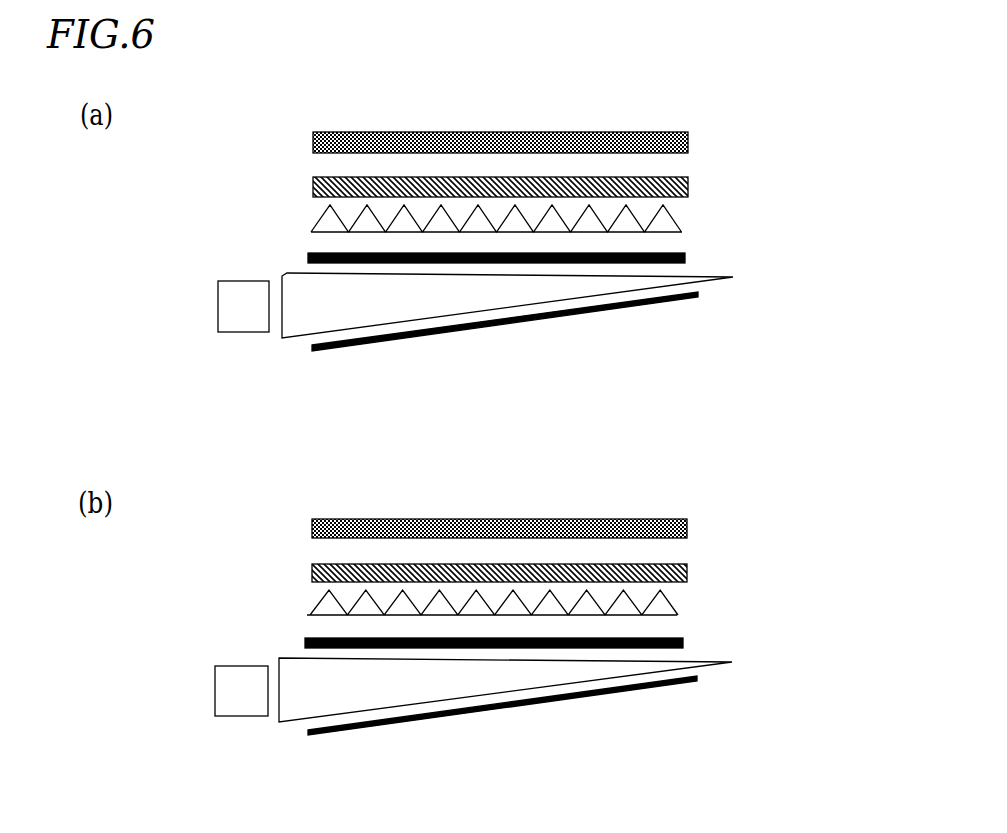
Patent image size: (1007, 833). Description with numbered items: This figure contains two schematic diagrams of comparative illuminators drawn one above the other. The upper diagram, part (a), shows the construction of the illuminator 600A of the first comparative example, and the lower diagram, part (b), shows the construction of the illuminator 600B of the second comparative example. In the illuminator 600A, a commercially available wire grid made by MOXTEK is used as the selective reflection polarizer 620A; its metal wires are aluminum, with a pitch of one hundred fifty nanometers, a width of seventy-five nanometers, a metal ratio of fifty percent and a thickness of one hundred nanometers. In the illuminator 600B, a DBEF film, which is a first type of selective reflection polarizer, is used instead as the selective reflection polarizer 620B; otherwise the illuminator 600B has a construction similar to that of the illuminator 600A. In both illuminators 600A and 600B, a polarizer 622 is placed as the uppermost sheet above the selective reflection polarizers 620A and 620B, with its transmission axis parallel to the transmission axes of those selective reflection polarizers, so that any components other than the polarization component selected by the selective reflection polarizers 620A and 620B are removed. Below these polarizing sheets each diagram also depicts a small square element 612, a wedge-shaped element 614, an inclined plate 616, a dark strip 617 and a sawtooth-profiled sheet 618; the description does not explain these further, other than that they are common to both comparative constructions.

The illuminator 600A is at (808, 110).
The illuminator 600B is at (808, 498).
The light source 612 is at (225, 303).
The light guide plate 614 is at (282, 338).
The reflection sheet 616 is at (603, 308).
The light absorbing sheet 617 is at (685, 257).
The prism sheet 618 is at (665, 227).
The selective reflection polarizer 620A is at (688, 187).
The selective reflection polarizer 620B is at (687, 573).
The polarizer 622 is at (647, 131).